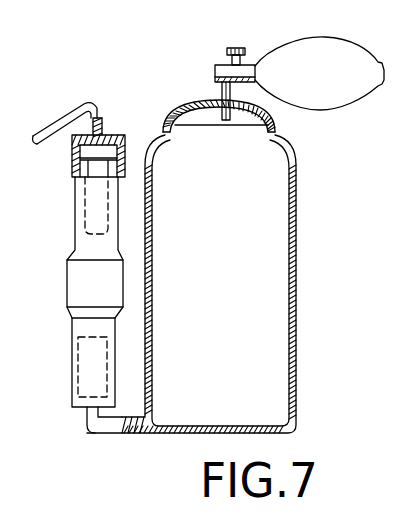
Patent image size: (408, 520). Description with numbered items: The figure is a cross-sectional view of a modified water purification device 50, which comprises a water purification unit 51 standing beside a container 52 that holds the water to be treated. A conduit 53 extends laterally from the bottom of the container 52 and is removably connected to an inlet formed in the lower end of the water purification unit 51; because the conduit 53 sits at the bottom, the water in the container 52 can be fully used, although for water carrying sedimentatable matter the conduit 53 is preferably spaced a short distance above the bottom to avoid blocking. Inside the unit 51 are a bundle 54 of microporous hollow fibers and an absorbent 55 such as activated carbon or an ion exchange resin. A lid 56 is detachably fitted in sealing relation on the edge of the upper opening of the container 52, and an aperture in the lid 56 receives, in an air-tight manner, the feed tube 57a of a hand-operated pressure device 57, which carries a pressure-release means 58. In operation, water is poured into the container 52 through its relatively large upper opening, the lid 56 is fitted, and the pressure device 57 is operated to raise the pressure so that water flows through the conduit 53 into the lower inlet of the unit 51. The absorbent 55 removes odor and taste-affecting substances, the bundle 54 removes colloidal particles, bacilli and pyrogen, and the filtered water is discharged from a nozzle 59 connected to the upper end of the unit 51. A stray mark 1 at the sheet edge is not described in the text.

The water purification device 50 is at (143, 106).
The water purification unit 51 is at (68, 212).
The container 52 is at (296, 315).
The conduit 53 is at (110, 437).
The bundle of microporous hollow fibers 54 is at (82, 227).
The absorbent 55 is at (78, 373).
The lid 56 is at (197, 102).
The hand-operated pressure device 57 is at (347, 97).
The feed tube 57a is at (224, 120).
The pressure-release means 58 is at (233, 48).
The nozzle 59 is at (77, 107).
The stray reference mark 1 is at (405, 203).